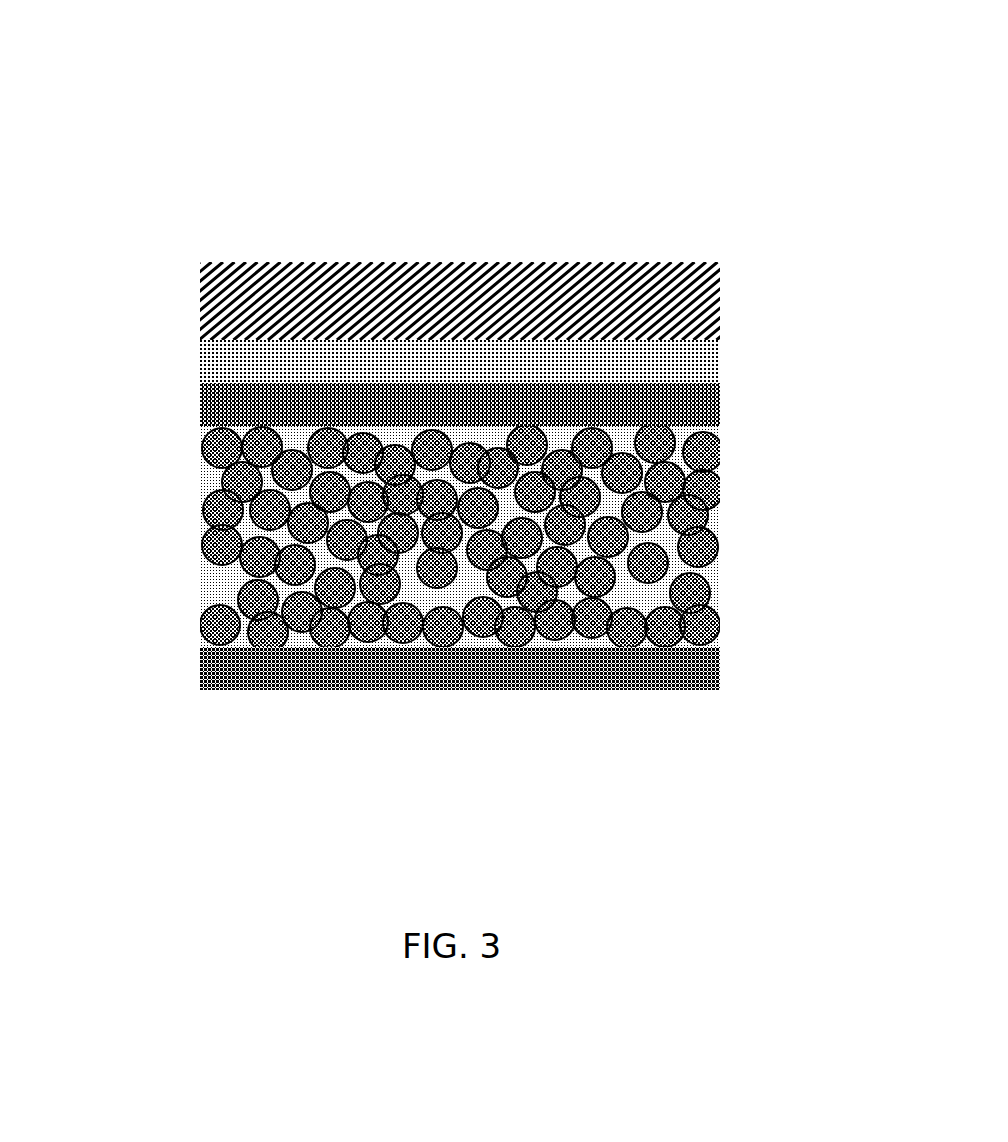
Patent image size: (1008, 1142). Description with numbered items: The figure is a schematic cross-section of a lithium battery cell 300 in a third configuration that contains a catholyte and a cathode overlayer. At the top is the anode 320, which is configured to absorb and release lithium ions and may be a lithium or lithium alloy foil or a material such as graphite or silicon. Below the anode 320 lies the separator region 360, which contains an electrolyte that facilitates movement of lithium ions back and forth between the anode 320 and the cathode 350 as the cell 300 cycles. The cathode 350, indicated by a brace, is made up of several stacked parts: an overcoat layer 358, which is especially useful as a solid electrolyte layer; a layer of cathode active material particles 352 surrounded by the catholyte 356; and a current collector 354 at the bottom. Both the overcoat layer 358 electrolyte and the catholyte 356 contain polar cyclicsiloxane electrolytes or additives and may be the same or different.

The lithium battery cell 300 is at (266, 183).
The anode 320 is at (248, 335).
The separator region 360 is at (657, 350).
The overcoat layer 358 is at (707, 412).
The catholyte 356 is at (542, 542).
The cathode active material particles 352 is at (515, 532).
The current collector 354 is at (242, 665).
The cathode 350 is at (195, 385).